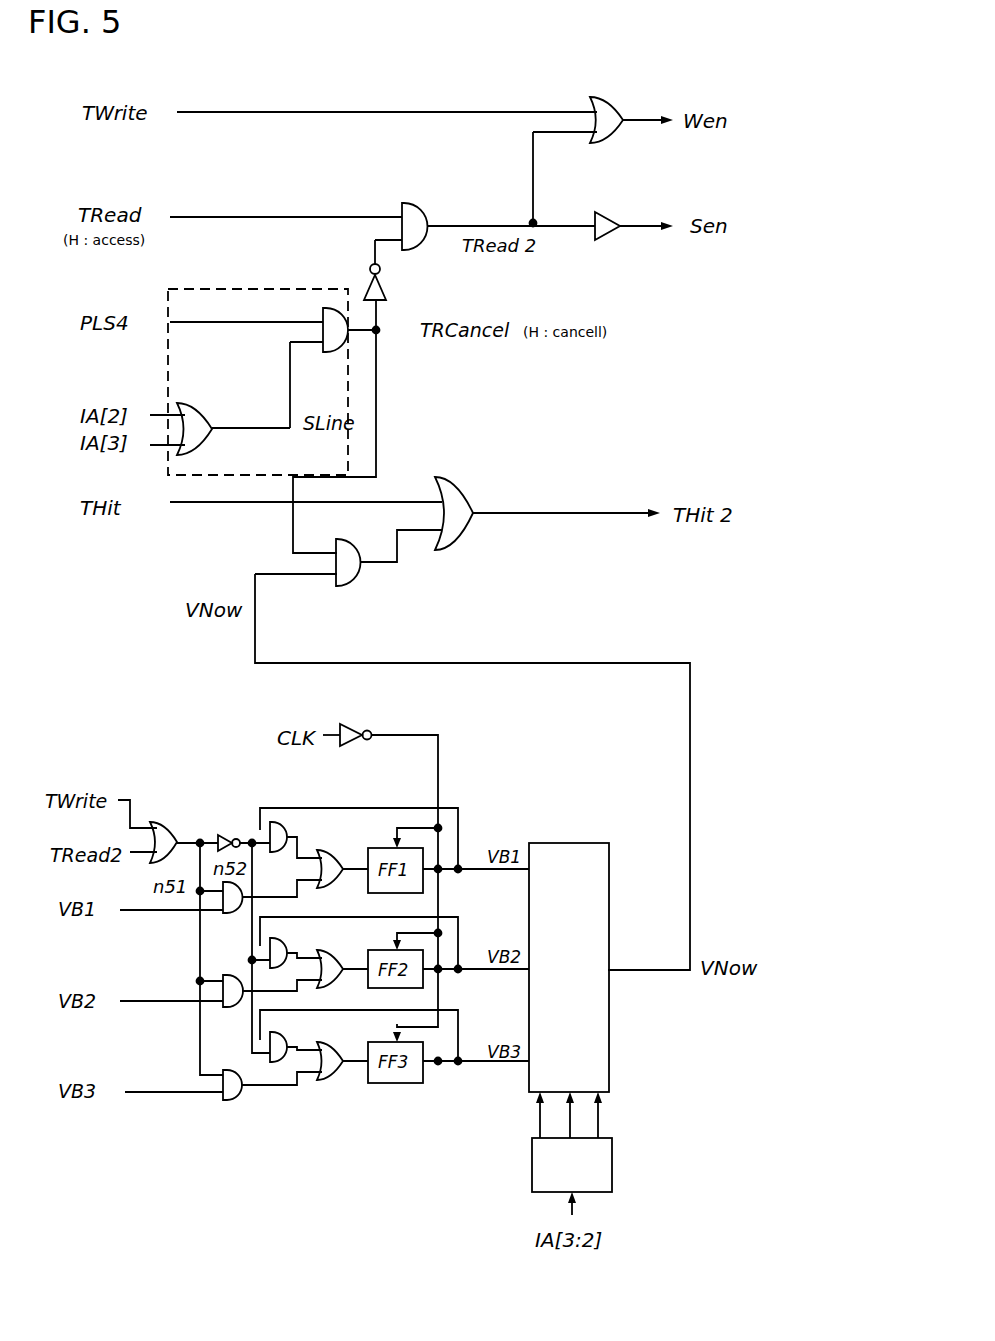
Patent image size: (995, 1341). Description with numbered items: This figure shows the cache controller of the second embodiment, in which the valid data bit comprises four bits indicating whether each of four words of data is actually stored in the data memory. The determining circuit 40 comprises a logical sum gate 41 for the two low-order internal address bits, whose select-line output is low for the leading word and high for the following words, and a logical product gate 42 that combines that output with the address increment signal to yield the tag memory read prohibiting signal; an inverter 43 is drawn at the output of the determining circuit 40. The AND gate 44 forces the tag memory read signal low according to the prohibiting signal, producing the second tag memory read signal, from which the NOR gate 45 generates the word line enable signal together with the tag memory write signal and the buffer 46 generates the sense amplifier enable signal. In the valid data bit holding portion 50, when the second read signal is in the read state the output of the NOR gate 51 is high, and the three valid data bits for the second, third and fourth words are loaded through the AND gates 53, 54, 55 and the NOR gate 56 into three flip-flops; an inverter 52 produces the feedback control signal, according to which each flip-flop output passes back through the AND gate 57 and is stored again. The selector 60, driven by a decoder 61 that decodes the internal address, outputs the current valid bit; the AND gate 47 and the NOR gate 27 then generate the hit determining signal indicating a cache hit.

The NOR gate 27 is at (458, 502).
The determining circuit 40 is at (258, 368).
The logical sum gate 41 is at (196, 416).
The logical product gate 42 is at (321, 318).
The inverter (TRCancel) 43 is at (392, 283).
The AND gate 44 is at (429, 215).
The NOR gate 45 is at (631, 107).
The buffer 46 is at (634, 215).
The AND gate 47 is at (347, 581).
The valid data bit holding portion 50 is at (320, 1105).
The NOR gate 51 is at (168, 829).
The inverter (n52) 52 is at (230, 832).
The AND gate 53 is at (228, 911).
The AND gate 54 is at (230, 1008).
The AND gate 55 is at (232, 1102).
The NOR gate 56 is at (338, 958).
The AND gate 57 is at (292, 933).
The selector 60 is at (569, 967).
The decoder 61 is at (572, 1165).